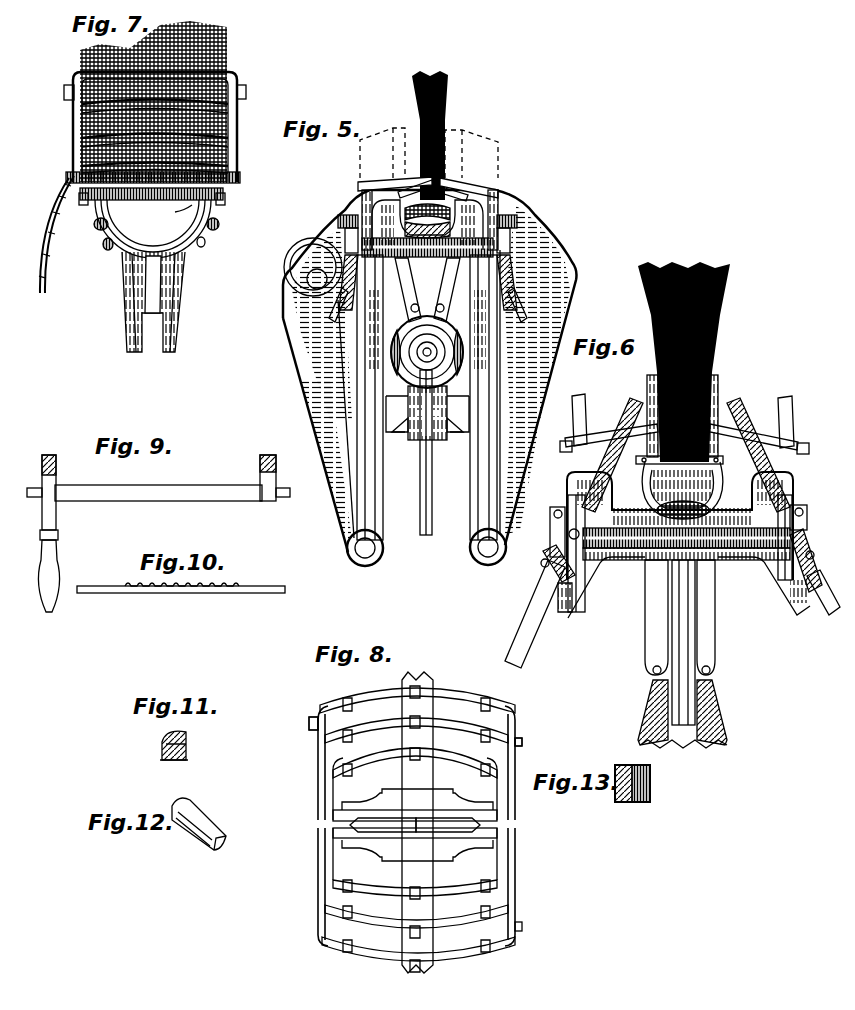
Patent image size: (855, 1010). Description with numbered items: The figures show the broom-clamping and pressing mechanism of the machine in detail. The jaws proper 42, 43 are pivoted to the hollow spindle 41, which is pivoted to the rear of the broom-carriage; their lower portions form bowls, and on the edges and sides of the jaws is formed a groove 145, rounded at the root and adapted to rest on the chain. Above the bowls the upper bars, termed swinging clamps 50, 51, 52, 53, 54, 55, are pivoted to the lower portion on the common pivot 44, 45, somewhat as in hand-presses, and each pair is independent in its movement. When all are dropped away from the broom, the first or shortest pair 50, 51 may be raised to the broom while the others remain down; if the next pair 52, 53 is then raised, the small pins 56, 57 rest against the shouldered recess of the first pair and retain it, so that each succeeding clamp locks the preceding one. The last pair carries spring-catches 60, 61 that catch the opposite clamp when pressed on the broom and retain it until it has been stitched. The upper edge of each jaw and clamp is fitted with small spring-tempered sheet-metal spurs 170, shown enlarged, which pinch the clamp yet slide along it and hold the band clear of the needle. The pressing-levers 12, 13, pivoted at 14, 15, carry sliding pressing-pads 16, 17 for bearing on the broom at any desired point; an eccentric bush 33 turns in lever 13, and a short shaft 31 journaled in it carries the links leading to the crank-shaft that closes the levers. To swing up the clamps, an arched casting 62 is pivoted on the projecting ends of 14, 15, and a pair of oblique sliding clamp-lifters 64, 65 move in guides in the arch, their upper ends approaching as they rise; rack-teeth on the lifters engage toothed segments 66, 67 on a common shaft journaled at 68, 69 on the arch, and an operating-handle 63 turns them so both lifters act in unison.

In FIG. 5, the pressing-lever 12 is at (540, 242).
In FIG. 5, the pressing-lever 13 is at (340, 212).
In FIG. 5, the pivot 14 is at (490, 562).
In FIG. 5, the pivot 15 is at (360, 560).
In FIG. 5, the pressing-pad 16 is at (506, 208).
In FIG. 5, the pressing-pad 17 is at (360, 200).
In FIG. 5, the short shaft 31 is at (310, 278).
In FIG. 5, the eccentric bush 33 is at (313, 267).
In FIG. 5, the hollow spindle 41 is at (427, 452).
In FIG. 6, the hollow spindle 41 is at (696, 714).
In FIG. 7, the jaw 42 is at (156, 276).
In FIG. 5, the jaw 42 is at (452, 290).
In FIG. 6, the jaw 42 is at (715, 624).
In FIG. 8, the jaw 42 is at (448, 824).
In FIG. 5, the jaw 43 is at (406, 290).
In FIG. 6, the jaw 43 is at (662, 613).
In FIG. 8, the jaw 43 is at (383, 824).
In FIG. 7, the pivot 44 is at (68, 180).
In FIG. 8, the pivot 44 is at (322, 834).
In FIG. 8, the pivot 45 is at (322, 814).
In FIG. 5, the swinging clamp 50 is at (472, 182).
In FIG. 6, the swinging clamp 50 is at (722, 388).
In FIG. 13, the swinging clamp 50 is at (652, 792).
In FIG. 8, the swinging clamp 50 is at (366, 888).
In FIG. 5, the swinging clamp 51 is at (414, 181).
In FIG. 6, the swinging clamp 51 is at (652, 378).
In FIG. 8, the swinging clamp 51 is at (368, 762).
In FIG. 5, the swinging clamp 52 is at (488, 192).
In FIG. 6, the swinging clamp 52 is at (764, 440).
In FIG. 13, the swinging clamp 52 is at (625, 803).
In FIG. 8, the swinging clamp 52 is at (416, 912).
In FIG. 5, the swinging clamp 53 is at (392, 184).
In FIG. 6, the swinging clamp 53 is at (612, 440).
In FIG. 8, the swinging clamp 53 is at (370, 730).
In FIG. 5, the swinging clamp 54 is at (498, 198).
In FIG. 6, the swinging clamp 54 is at (805, 448).
In FIG. 8, the swinging clamp 54 is at (418, 946).
In FIG. 5, the swinging clamp 55 is at (389, 176).
In FIG. 6, the swinging clamp 55 is at (576, 452).
In FIG. 8, the swinging clamp 55 is at (366, 697).
In FIG. 13, the small pin 56 is at (617, 770).
In FIG. 8, the small pin 56 is at (322, 870).
In FIG. 8, the small pin 57 is at (324, 775).
In FIG. 7, the spring-catch 60 is at (62, 92).
In FIG. 6, the spring-catch 60 is at (794, 432).
In FIG. 7, the spring-catch 61 is at (248, 92).
In FIG. 6, the spring-catch 61 is at (568, 420).
In FIG. 6, the arched casting 62 is at (568, 584).
In FIG. 9, the operating-handle 63 is at (54, 572).
In FIG. 6, the clamp-lifter 64 is at (822, 614).
In FIG. 10, the clamp-lifter 64 is at (181, 597).
In FIG. 5, the clamp-lifter 65 is at (330, 318).
In FIG. 6, the clamp-lifter 65 is at (520, 632).
In FIG. 6, the segment 66 is at (783, 562).
In FIG. 9, the segment 66 is at (276, 478).
In FIG. 6, the segment 67 is at (578, 567).
In FIG. 9, the segment 67 is at (56, 483).
In FIG. 6, the journal 68 is at (808, 522).
In FIG. 9, the journal 68 is at (290, 493).
In FIG. 6, the journal 69 is at (553, 531).
In FIG. 9, the journal 69 is at (32, 498).
In FIG. 7, the groove 145 is at (222, 190).
In FIG. 7, the spur 170 is at (216, 64).
In FIG. 11, the spur 170 is at (187, 750).
In FIG. 12, the spur 170 is at (204, 818).
In FIG. 8, the spur 170 is at (484, 697).